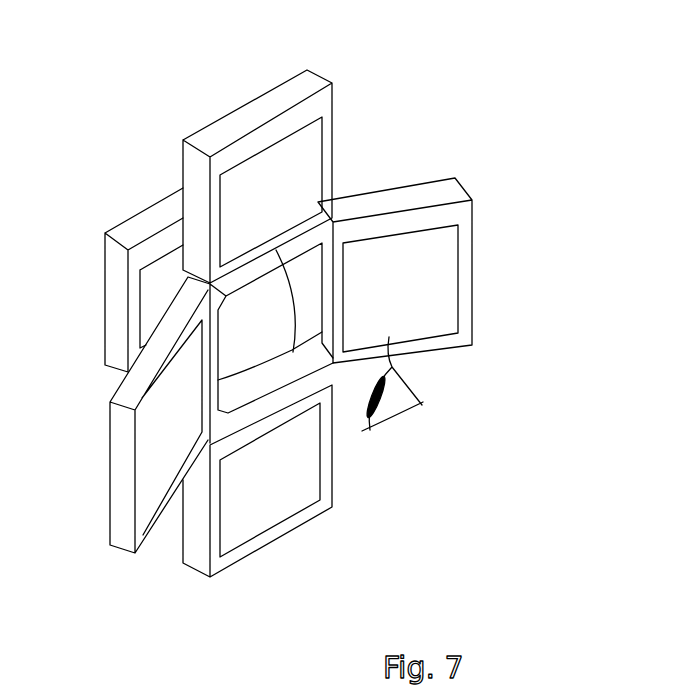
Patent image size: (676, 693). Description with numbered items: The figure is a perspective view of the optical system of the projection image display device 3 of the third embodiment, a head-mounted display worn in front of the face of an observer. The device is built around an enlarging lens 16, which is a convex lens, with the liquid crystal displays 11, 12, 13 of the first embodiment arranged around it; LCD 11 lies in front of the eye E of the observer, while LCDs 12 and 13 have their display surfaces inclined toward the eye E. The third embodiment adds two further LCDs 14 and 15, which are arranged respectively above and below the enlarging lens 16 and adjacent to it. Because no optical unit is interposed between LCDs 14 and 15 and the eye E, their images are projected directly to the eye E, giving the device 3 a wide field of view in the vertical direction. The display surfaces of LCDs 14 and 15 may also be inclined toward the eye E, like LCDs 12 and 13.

The projection image display device 3 is at (289, 340).
The liquid crystal display 11 is at (148, 298).
The liquid crystal display 12 is at (152, 490).
The liquid crystal display 13 is at (450, 288).
The liquid crystal display 14 is at (265, 165).
The liquid crystal display 15 is at (263, 515).
The enlarging lens 16 is at (312, 273).
The eye E is at (405, 416).